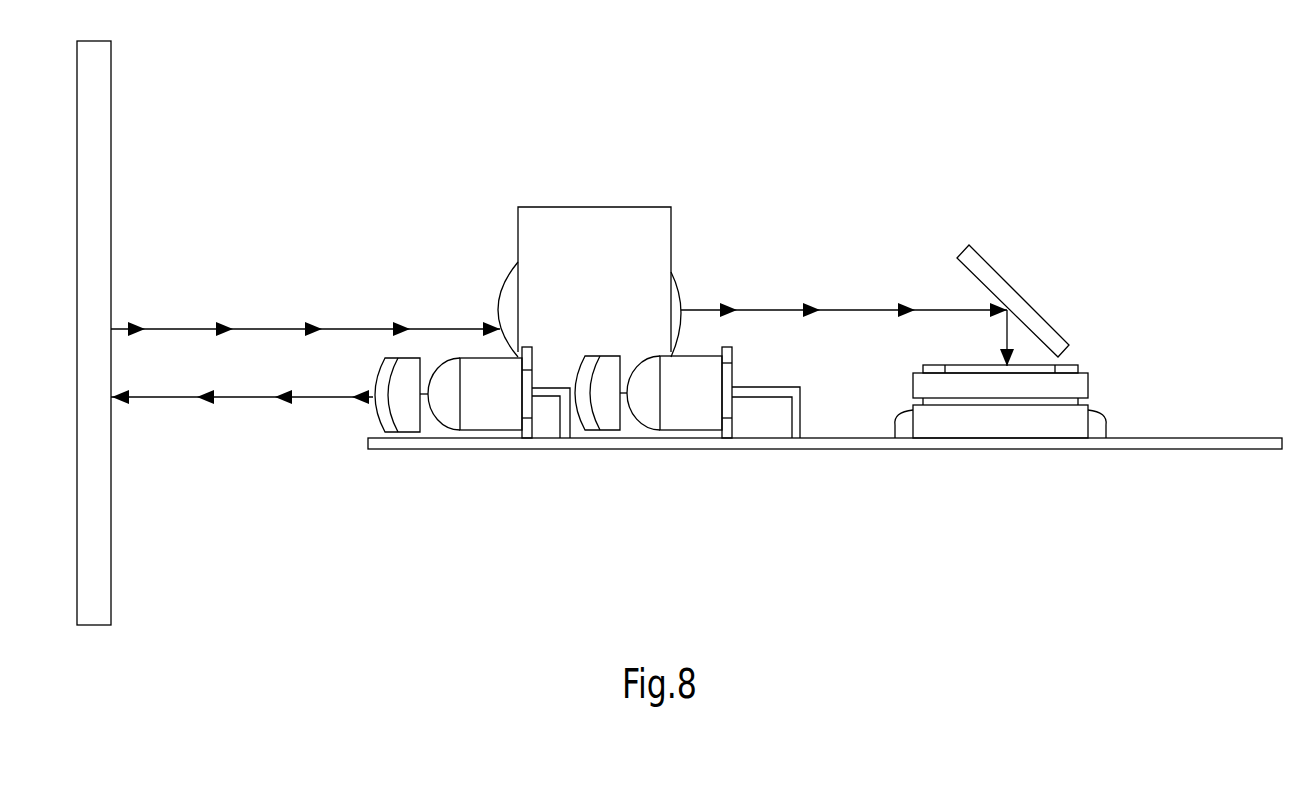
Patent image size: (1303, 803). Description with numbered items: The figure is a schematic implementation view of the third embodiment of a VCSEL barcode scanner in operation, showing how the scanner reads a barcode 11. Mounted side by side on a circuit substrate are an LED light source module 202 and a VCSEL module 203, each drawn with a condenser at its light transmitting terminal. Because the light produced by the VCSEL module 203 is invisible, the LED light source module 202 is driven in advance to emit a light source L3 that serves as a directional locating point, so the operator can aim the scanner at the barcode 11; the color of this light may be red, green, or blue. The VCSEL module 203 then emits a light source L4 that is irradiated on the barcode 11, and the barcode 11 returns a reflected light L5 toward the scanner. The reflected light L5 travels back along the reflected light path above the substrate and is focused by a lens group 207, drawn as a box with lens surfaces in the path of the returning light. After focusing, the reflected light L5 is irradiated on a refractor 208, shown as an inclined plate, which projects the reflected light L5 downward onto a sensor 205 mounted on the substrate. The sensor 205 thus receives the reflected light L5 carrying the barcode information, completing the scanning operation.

The barcode 11 is at (103, 600).
The light source L3 is at (323, 397).
The light source L4 is at (242, 329).
The reflected light L5 is at (428, 328).
The LED light source module 202 is at (498, 407).
The VCSEL module 203 is at (672, 383).
The sensor 205 is at (1003, 422).
The lens group 207 is at (567, 225).
The refractor 208 is at (993, 283).